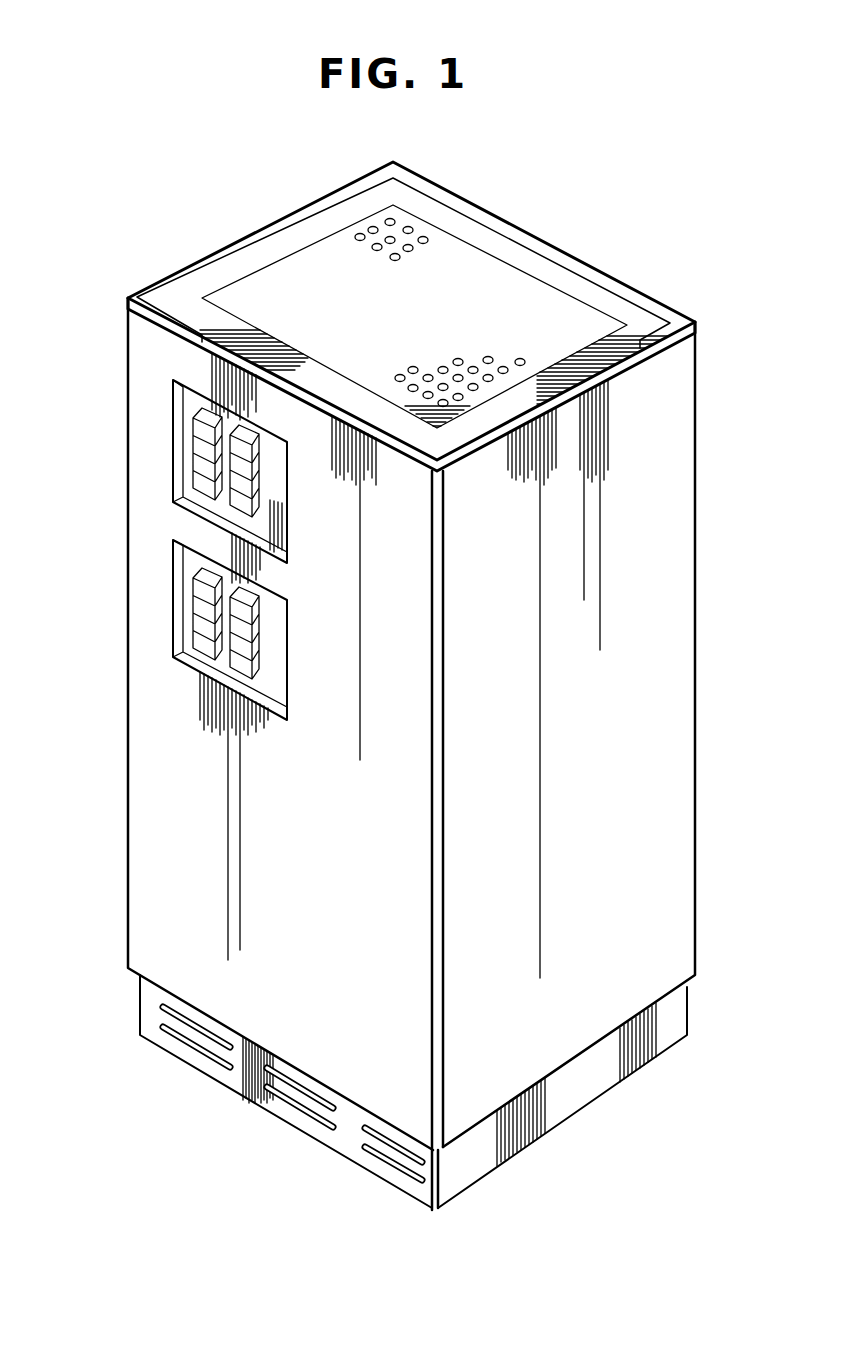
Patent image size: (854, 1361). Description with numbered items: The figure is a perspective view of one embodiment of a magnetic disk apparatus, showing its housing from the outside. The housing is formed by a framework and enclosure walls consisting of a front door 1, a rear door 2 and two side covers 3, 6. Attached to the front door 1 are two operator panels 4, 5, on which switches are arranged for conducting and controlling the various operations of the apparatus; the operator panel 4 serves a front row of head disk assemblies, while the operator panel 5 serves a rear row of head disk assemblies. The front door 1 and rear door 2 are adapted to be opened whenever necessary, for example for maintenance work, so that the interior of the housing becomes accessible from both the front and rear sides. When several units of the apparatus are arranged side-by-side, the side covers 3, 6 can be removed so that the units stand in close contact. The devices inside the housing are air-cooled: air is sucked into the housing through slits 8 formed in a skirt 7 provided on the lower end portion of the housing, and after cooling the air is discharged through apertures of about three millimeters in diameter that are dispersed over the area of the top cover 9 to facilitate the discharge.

The front door 1 is at (138, 383).
The rear door 2 is at (578, 262).
The side cover 3 is at (231, 243).
The operator panel 4 is at (193, 488).
The operator panel 5 is at (186, 618).
The side cover 6 is at (692, 418).
The skirt 7 is at (380, 1167).
The slits 8 is at (285, 1100).
The top cover 9 is at (462, 248).